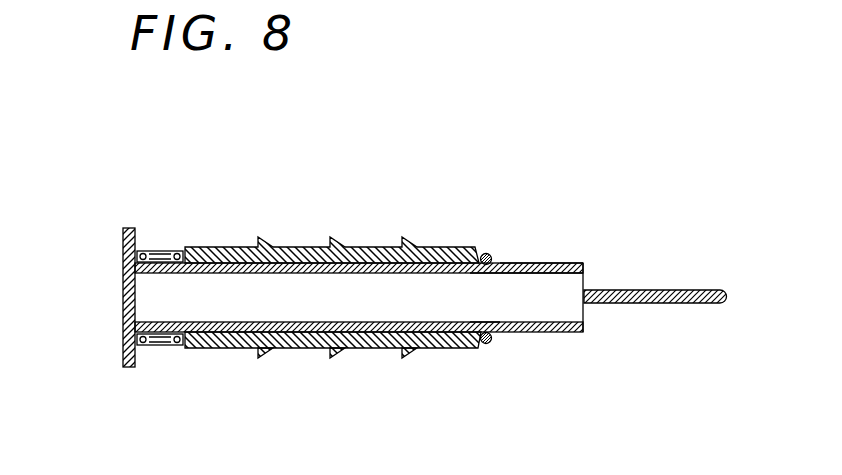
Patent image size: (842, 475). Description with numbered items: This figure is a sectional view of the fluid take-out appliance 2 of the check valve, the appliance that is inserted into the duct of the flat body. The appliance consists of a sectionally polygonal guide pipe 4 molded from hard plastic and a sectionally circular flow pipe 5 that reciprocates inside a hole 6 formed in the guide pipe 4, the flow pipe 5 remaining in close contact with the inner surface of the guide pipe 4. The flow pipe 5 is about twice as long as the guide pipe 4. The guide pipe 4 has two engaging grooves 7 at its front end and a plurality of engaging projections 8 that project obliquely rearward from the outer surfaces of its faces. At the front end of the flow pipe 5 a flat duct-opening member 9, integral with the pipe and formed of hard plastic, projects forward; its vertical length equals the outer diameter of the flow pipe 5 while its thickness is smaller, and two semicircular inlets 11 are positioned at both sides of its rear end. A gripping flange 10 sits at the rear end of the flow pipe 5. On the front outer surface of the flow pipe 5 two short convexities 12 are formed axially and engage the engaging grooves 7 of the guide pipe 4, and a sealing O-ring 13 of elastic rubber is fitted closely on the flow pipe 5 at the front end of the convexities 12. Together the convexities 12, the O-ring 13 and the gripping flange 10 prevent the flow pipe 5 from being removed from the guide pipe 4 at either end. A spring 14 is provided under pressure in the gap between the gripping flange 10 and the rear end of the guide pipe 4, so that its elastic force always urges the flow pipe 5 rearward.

The fluid take-out appliance 2 is at (362, 247).
The guide pipe 4 is at (297, 247).
The flow pipe 5 is at (547, 262).
The hole 6 is at (377, 326).
The engaging grooves 7 is at (474, 274).
The engaging projections 8 is at (335, 350).
The duct-opening member 9 is at (712, 292).
The gripping flange 10 is at (121, 360).
The semicircular inlets 11 is at (578, 289).
The convexities 12 is at (453, 257).
The sealing O-ring 13 is at (488, 346).
The spring 14 is at (160, 249).